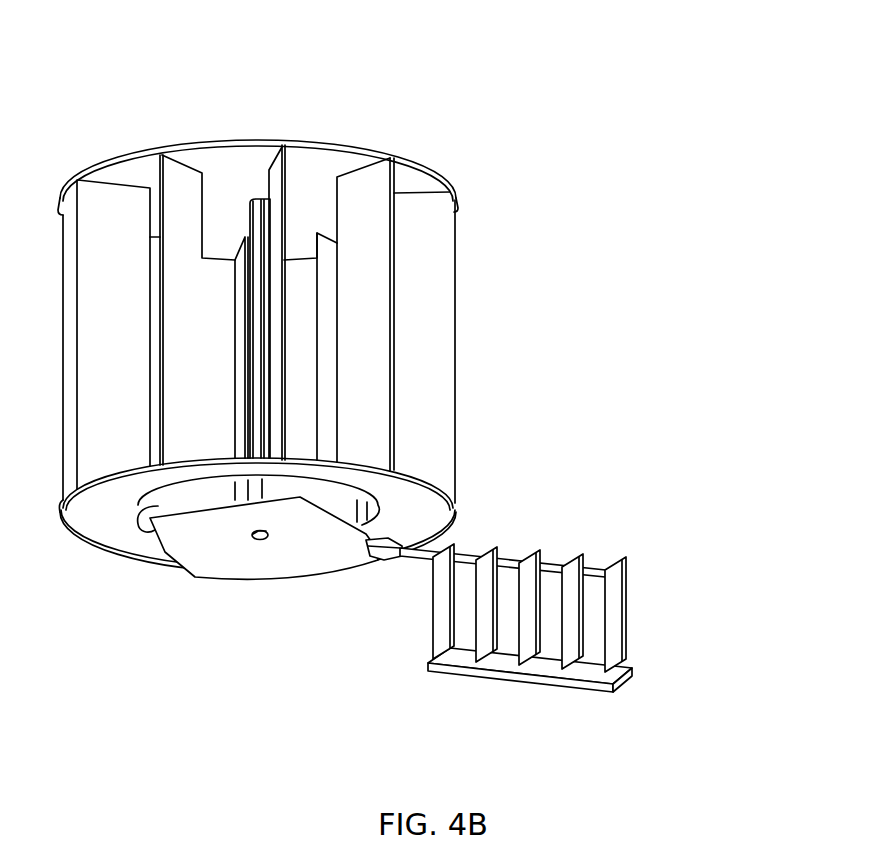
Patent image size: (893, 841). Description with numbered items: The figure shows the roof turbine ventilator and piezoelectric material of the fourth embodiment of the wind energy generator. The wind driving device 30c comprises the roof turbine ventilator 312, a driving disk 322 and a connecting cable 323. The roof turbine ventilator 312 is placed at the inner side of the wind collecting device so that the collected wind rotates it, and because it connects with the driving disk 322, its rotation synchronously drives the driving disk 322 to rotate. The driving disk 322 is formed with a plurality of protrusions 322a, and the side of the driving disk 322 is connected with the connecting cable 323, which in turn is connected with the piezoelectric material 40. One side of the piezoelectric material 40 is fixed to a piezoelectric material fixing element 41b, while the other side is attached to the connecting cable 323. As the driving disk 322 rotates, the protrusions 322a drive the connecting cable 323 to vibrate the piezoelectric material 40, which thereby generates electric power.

The roof turbine ventilator 312 is at (160, 66).
The wind driving device 30c is at (673, 152).
The driving disk 322 is at (187, 582).
The protrusions 322a is at (358, 546).
The connecting cable 323 is at (545, 560).
The piezoelectric material 40 is at (538, 603).
The piezoelectric material fixing element 41b is at (563, 680).